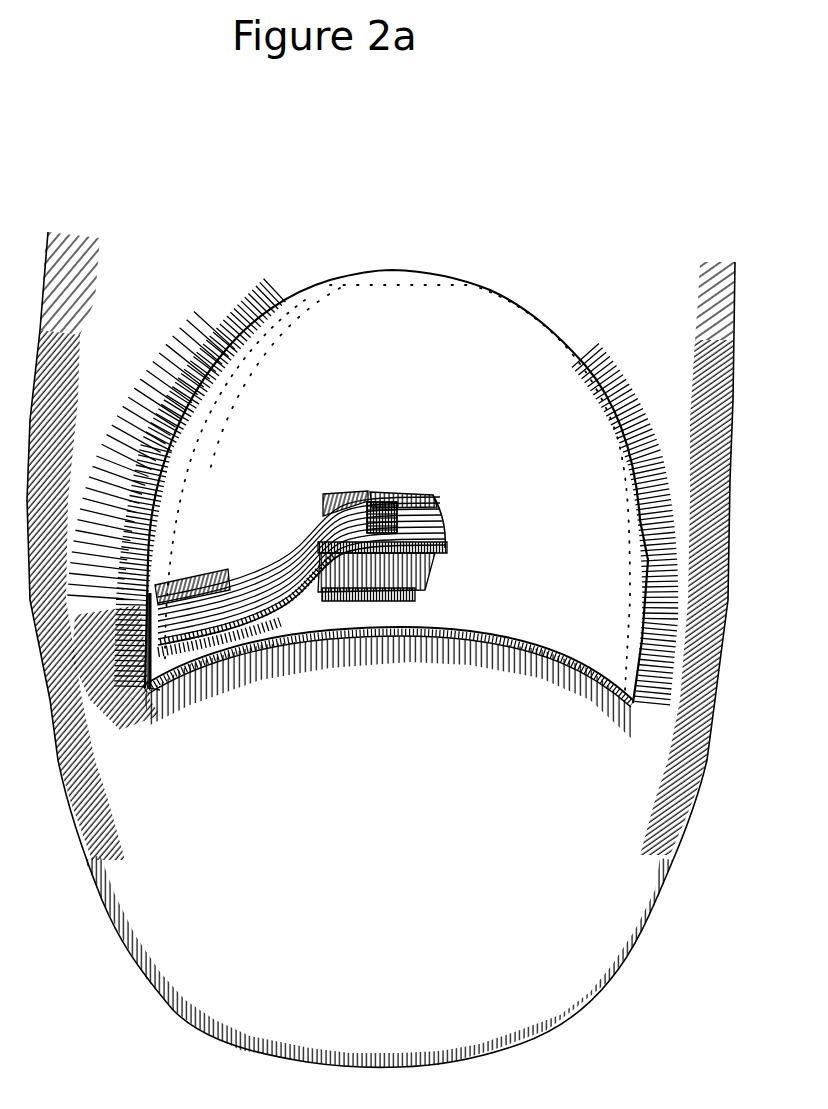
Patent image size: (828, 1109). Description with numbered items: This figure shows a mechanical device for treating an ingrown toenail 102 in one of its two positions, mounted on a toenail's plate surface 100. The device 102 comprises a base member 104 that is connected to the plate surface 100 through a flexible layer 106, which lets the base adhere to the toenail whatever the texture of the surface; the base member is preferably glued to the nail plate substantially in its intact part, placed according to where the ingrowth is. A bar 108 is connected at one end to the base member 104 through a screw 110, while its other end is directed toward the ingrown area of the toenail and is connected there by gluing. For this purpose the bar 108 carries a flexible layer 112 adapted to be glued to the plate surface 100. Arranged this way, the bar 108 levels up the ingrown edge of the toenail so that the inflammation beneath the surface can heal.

The toenail plate surface 100 is at (413, 315).
The device for treating an ingrown toenail 102 is at (420, 596).
The base member 104 is at (325, 601).
The flexible layer 106 is at (390, 602).
The bar 108 is at (262, 578).
The screw 110 is at (385, 500).
The flexible layer 112 is at (194, 692).